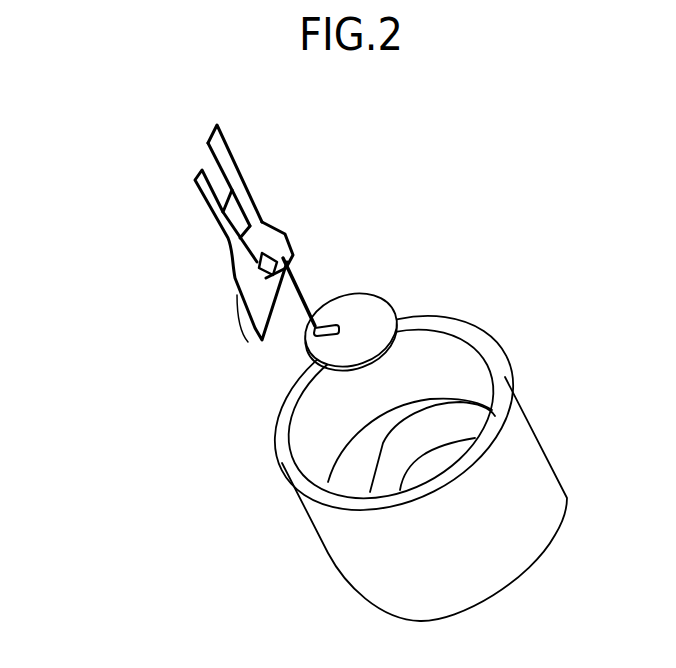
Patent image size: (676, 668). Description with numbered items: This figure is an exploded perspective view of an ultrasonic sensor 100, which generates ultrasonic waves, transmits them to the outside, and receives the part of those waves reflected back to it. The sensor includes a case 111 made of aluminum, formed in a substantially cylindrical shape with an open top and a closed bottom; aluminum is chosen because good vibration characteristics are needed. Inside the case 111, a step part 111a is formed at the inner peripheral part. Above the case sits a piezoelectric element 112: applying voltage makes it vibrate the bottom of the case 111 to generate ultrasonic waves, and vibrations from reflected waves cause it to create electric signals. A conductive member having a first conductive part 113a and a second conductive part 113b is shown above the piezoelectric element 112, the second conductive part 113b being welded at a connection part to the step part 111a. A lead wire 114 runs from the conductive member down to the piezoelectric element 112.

The ultrasonic sensor 100 is at (79, 119).
The case 111 is at (312, 488).
The step part 111a is at (353, 472).
The piezoelectric element 112 is at (374, 299).
The first conductive part 113a is at (250, 207).
The second conductive part 113b is at (228, 244).
The lead wire 114 is at (300, 293).